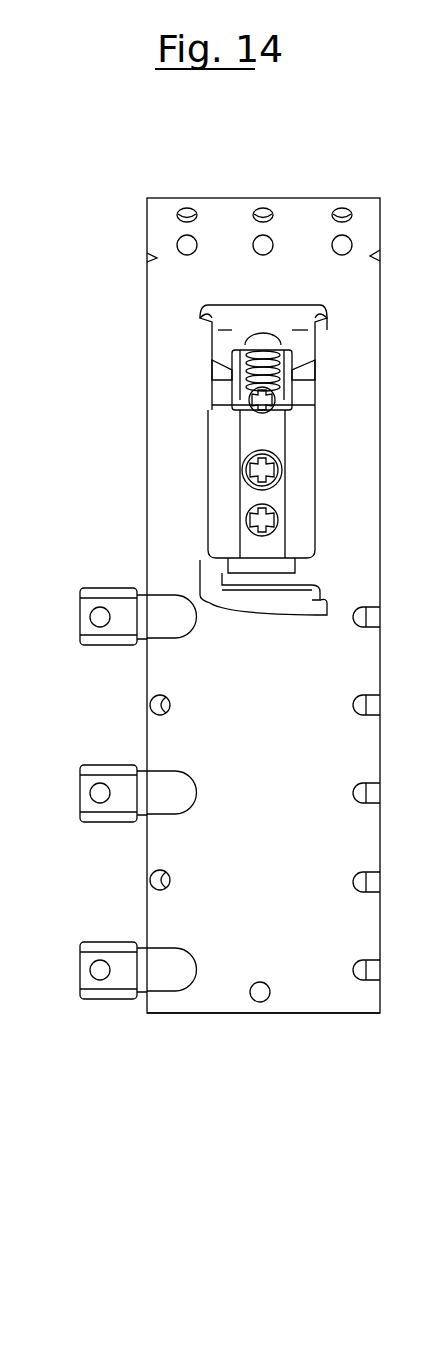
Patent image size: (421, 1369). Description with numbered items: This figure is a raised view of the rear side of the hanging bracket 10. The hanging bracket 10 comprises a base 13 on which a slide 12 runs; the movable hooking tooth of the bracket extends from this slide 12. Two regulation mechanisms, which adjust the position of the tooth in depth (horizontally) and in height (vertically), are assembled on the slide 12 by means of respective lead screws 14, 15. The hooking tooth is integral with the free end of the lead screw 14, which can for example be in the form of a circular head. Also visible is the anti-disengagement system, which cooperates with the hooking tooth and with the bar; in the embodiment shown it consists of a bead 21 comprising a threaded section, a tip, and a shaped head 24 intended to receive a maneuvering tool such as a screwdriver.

The hanging bracket 10 is at (150, 1055).
The slide 12 is at (243, 469).
The base 13 is at (303, 988).
The lead screw 14 is at (223, 432).
The lead screw 15 is at (255, 398).
The bead 21 is at (243, 522).
The shaped head 24 is at (420, 478).